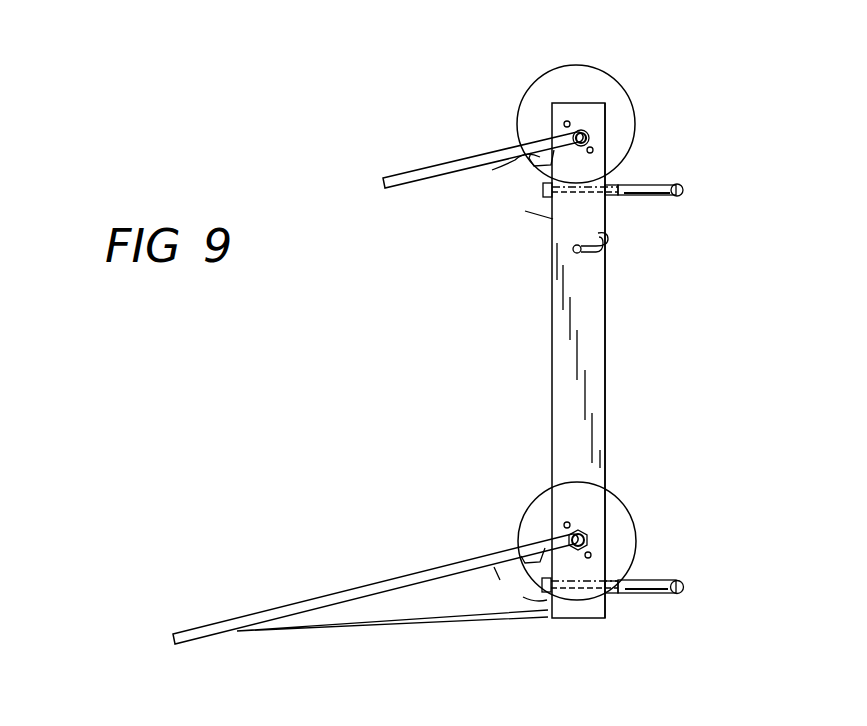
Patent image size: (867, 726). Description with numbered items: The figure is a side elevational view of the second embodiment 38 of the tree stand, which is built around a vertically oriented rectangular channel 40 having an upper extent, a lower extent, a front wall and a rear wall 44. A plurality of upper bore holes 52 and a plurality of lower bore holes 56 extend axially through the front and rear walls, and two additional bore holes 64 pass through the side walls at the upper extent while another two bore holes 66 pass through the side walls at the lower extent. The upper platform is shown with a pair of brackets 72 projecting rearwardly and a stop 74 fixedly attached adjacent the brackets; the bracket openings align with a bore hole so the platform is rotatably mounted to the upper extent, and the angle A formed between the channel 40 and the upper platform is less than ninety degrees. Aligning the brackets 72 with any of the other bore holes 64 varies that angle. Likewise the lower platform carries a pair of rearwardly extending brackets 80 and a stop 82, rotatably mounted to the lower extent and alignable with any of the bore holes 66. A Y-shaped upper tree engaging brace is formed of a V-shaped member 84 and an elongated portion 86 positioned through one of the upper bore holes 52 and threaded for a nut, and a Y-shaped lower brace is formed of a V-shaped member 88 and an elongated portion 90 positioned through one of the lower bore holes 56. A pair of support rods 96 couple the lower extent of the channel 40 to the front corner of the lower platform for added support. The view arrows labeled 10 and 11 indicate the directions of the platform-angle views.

The section view arrow (FIG. 10) 10 is at (517, 113).
The section view arrow (FIG. 11) 11 is at (518, 525).
The second embodiment 38 is at (628, 355).
The rectangular channel 40 is at (540, 371).
The rear wall 44 is at (606, 420).
The upper bore holes 52 is at (585, 193).
The lower bore holes 56 is at (573, 590).
The additional bore holes 64 is at (593, 149).
The additional bore holes 66 is at (568, 524).
The brackets 72 is at (555, 133).
The stop 74 is at (493, 160).
The brackets 80 is at (548, 538).
The stop 82 is at (513, 552).
The V-shaped member 84 is at (658, 186).
The elongated portion 86 is at (610, 194).
The V-shaped member 88 is at (670, 580).
The elongated portion 90 is at (613, 589).
The support rods 96 is at (433, 620).
The angle A is at (491, 169).